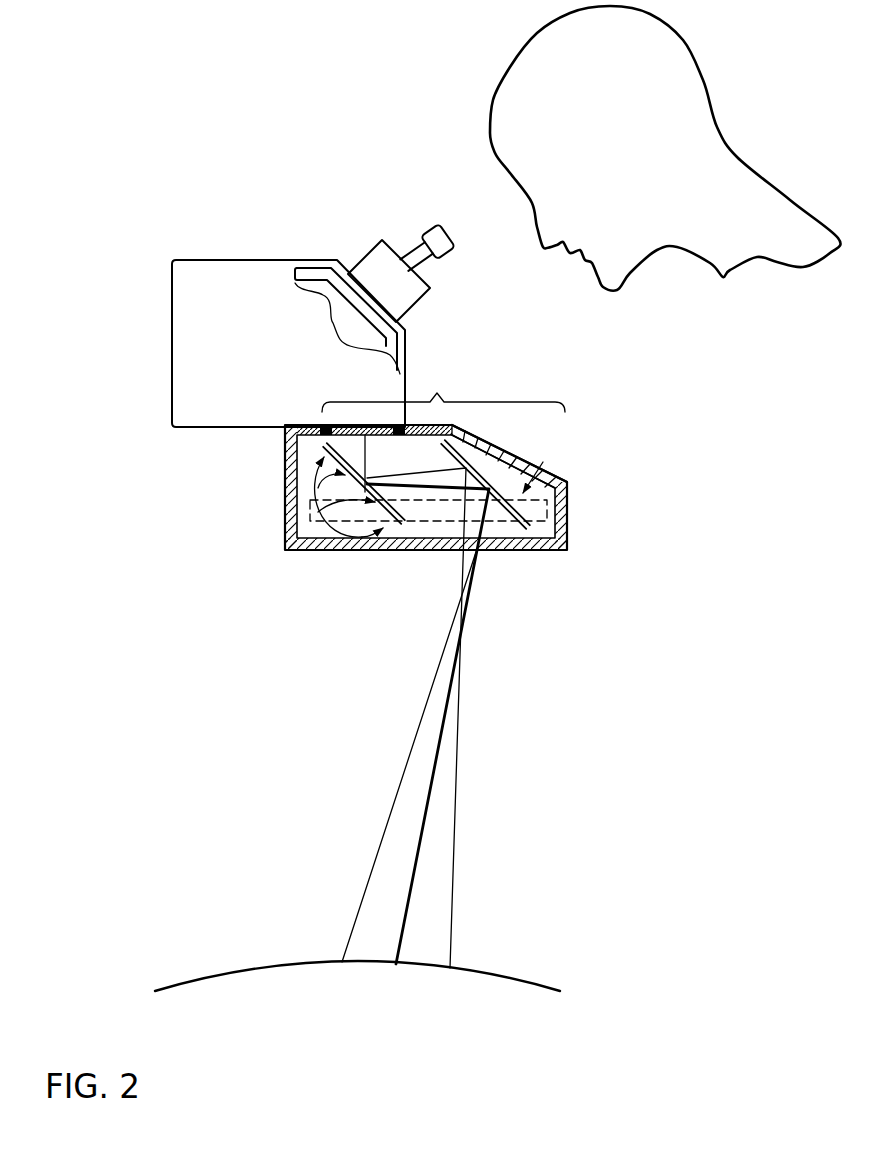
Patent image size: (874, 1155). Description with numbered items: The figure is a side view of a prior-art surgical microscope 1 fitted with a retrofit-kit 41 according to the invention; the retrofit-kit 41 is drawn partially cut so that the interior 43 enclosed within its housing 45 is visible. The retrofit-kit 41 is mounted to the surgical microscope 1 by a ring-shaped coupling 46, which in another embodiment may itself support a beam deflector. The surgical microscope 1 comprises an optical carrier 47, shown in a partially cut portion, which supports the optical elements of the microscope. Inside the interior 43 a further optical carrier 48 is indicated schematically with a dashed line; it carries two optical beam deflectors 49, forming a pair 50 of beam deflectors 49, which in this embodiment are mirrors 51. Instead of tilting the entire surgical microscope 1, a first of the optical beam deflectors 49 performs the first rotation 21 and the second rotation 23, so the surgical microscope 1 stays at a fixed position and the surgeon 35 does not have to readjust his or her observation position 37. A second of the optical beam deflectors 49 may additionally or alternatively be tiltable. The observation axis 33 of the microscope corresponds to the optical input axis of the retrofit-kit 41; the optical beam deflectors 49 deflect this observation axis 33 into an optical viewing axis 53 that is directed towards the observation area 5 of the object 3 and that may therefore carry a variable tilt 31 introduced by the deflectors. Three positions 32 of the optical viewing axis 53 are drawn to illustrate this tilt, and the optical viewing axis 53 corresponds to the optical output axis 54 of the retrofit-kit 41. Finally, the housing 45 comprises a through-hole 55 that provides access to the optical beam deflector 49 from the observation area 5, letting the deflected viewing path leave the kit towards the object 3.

The surgical microscope 1 is at (158, 193).
The object 3 is at (494, 986).
The observation area 5 is at (476, 946).
The first rotation 21 is at (384, 530).
The second rotation 23 is at (318, 512).
The variable tilt 31 is at (470, 770).
The positions of the optical viewing axis 32 is at (385, 829).
The observation axis 33 is at (434, 431).
The surgeon 35 is at (517, 86).
The observation position 37 is at (693, 60).
The retrofit-kit 41 is at (569, 519).
The interior 43 is at (568, 488).
The housing 45 is at (553, 549).
The coupling 46 is at (322, 428).
The optical carrier 47 is at (312, 273).
The further optical carrier 48 is at (503, 518).
The optical beam deflectors 49 is at (320, 474).
The pair of beam deflectors 50 is at (431, 397).
The mirrors 51 is at (319, 485).
The optical viewing axis 53 is at (424, 820).
The optical output axis 54 is at (442, 726).
The through-hole 55 is at (440, 556).